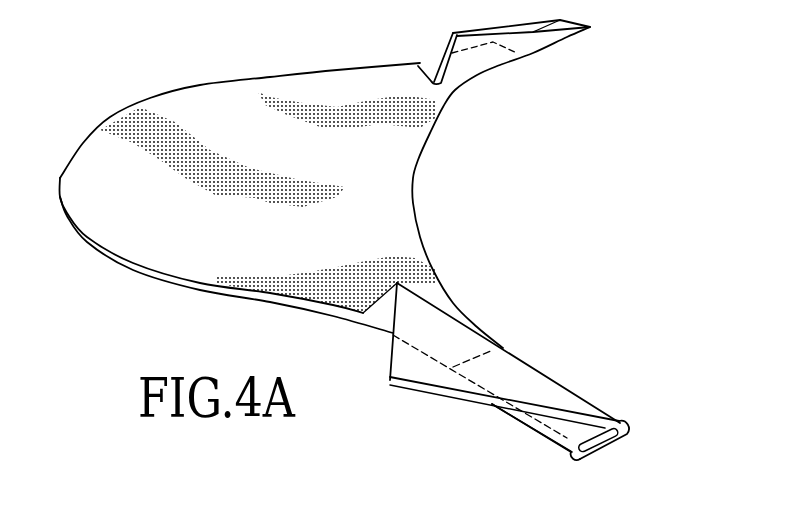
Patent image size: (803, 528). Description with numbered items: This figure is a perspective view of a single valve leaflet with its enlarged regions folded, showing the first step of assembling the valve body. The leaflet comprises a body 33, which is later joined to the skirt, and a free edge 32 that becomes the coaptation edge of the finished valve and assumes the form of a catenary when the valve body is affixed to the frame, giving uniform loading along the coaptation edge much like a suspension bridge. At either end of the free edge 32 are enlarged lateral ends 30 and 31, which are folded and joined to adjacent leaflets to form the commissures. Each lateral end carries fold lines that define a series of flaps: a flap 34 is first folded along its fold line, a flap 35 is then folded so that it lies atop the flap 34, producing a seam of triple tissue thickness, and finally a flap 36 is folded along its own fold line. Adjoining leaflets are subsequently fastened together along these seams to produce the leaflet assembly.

The enlarged lateral end 30 is at (550, 65).
The enlarged lateral end 31 is at (538, 356).
The free edge 32 is at (403, 202).
The body 33 is at (235, 141).
The flap 34 is at (615, 442).
The flap 35 is at (572, 453).
The flap 36 is at (433, 392).